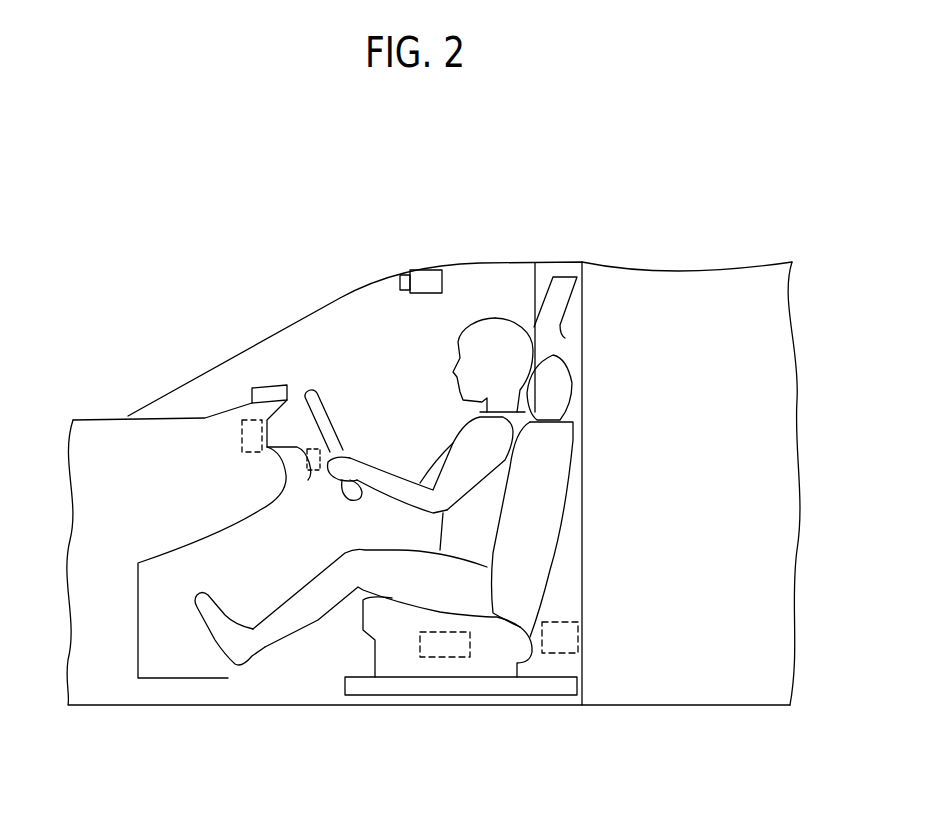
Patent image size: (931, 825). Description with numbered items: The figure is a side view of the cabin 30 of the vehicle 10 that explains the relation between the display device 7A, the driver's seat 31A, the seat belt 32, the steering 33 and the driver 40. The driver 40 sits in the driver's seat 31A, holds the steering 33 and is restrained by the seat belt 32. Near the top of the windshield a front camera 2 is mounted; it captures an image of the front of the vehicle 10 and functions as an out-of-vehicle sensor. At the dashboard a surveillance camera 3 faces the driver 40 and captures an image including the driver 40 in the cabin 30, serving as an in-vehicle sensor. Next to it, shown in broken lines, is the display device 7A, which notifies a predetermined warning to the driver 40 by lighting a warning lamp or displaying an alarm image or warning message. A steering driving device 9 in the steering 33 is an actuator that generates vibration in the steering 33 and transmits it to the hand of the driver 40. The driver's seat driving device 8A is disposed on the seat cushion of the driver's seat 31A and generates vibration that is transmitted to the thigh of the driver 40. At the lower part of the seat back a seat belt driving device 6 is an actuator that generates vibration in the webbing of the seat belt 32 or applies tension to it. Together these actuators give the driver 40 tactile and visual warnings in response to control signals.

The vehicle 10 is at (322, 215).
The front camera 2 is at (428, 278).
The surveillance camera 3 is at (272, 387).
The display device 7A is at (247, 420).
The steering 33 is at (315, 412).
The steering driving device 9 is at (317, 480).
The driver 40 is at (490, 328).
The seat belt 32 is at (560, 290).
The cabin 30 is at (640, 287).
The driver's seat 31A is at (583, 452).
The driver's seat driving device 8A is at (447, 657).
The seat belt driving device 6 is at (577, 640).